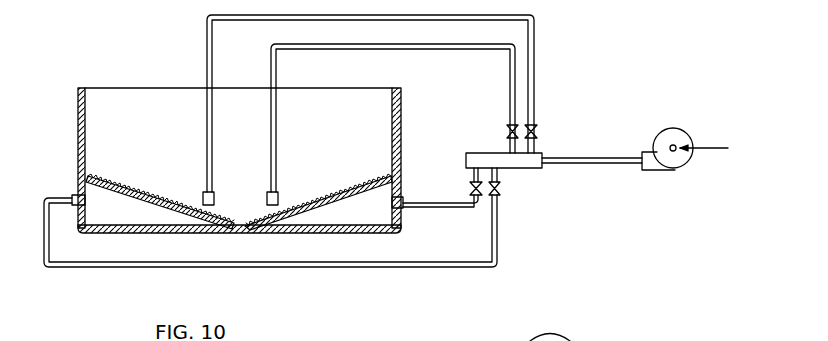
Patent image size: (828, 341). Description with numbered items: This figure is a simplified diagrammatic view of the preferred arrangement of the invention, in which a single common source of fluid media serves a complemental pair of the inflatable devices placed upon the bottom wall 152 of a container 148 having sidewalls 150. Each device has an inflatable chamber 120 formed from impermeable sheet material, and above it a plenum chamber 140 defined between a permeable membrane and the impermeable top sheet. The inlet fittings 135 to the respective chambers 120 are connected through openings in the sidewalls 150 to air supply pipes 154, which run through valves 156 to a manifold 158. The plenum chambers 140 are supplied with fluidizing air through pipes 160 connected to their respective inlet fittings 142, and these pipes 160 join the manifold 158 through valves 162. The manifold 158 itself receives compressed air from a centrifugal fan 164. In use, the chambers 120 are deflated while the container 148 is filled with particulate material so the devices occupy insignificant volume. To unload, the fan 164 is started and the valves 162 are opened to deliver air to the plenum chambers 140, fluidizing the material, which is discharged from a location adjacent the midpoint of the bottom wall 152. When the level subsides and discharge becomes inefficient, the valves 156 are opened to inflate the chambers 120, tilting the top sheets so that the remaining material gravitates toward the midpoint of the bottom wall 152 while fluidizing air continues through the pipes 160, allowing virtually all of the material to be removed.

The inflatable chamber 120 is at (131, 215).
The inlet fitting 135 is at (76, 195).
The plenum chamber 140 is at (113, 177).
The inlet fitting 142 is at (213, 193).
The container 148 is at (120, 88).
The sidewalls 150 is at (85, 116).
The bottom wall 152 is at (213, 233).
The air supply pipes 154 is at (412, 262).
The valves 156 is at (499, 190).
The manifold 158 is at (483, 153).
The pipes 160 is at (271, 117).
The valves 162 is at (536, 136).
The centrifugal fan 164 is at (672, 170).